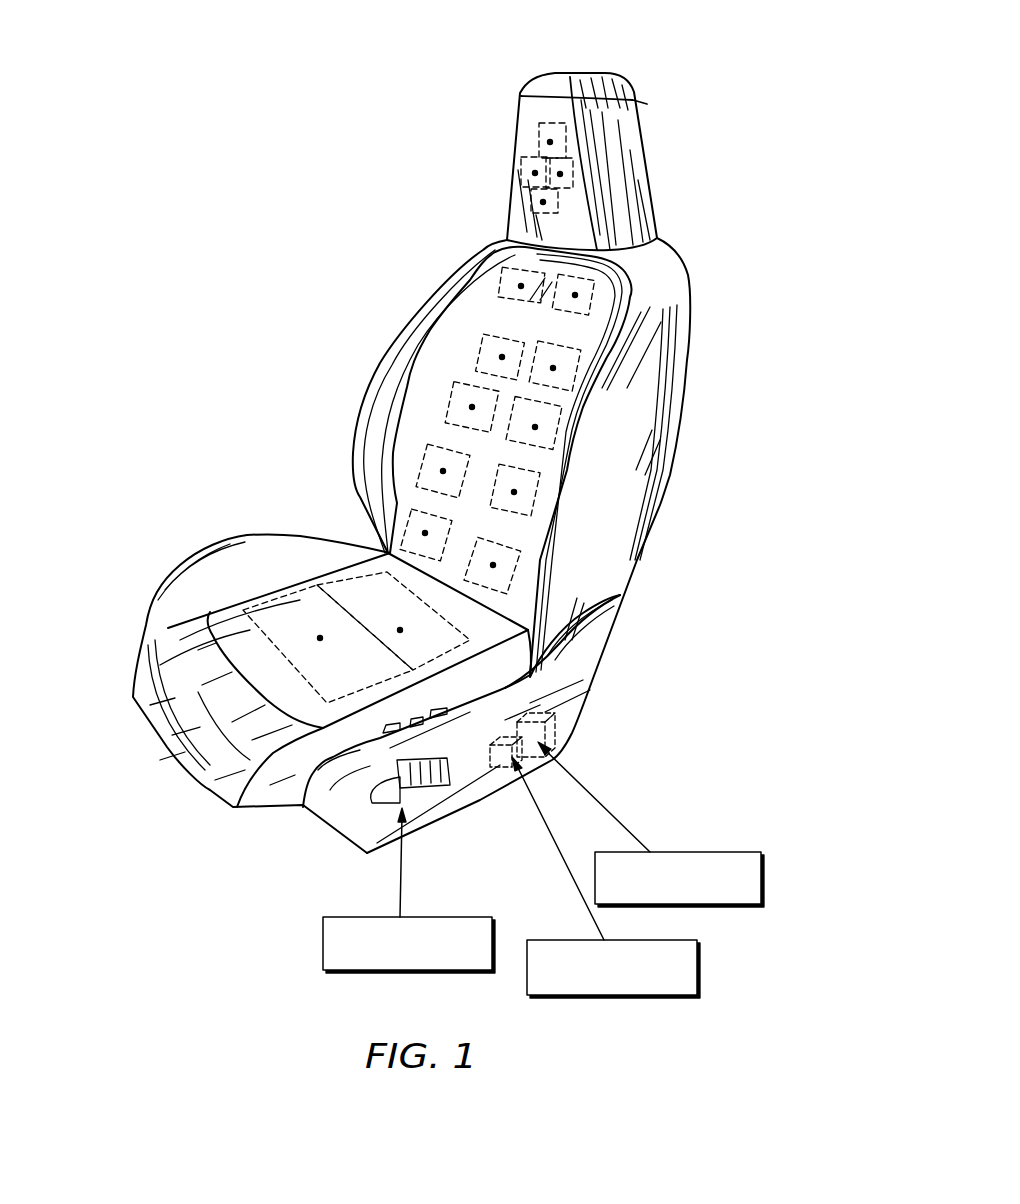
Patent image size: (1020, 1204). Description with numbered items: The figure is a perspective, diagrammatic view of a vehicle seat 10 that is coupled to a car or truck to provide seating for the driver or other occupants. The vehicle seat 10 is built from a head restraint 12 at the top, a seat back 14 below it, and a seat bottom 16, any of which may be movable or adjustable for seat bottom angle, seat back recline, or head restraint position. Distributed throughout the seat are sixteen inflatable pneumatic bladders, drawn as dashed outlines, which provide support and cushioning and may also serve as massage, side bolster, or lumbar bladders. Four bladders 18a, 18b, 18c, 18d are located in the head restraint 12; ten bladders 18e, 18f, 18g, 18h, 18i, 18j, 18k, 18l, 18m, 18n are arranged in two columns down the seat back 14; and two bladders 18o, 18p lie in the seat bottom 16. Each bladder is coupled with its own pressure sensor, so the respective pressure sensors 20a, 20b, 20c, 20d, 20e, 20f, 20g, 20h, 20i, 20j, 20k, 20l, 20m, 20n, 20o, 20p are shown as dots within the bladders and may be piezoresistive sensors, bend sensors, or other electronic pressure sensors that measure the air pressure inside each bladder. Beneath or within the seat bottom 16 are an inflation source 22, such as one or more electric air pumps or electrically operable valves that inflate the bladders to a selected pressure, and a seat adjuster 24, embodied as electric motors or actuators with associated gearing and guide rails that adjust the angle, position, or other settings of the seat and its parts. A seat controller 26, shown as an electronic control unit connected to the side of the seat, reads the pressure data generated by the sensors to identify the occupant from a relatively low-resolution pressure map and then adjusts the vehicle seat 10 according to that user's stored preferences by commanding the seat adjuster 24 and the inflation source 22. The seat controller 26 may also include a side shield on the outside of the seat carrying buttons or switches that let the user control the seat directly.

The vehicle seat 10 is at (287, 112).
The head restraint 12 is at (620, 87).
The seat back 14 is at (655, 385).
The seat bottom 16 is at (170, 728).
The pneumatic bladder 18a is at (553, 120).
The pneumatic bladder 18b is at (525, 157).
The pneumatic bladder 18c is at (572, 157).
The pneumatic bladder 18d is at (560, 210).
The pneumatic bladder 18e is at (525, 268).
The pneumatic bladder 18f is at (592, 282).
The pneumatic bladder 18g is at (510, 336).
The pneumatic bladder 18h is at (565, 342).
The pneumatic bladder 18i is at (485, 383).
The pneumatic bladder 18j is at (555, 402).
The pneumatic bladder 18k is at (453, 446).
The pneumatic bladder 18l is at (540, 462).
The pneumatic bladder 18m is at (405, 510).
The pneumatic bladder 18n is at (515, 535).
The pneumatic bladder 18o is at (470, 638).
The pneumatic bladder 18p is at (247, 614).
The pressure sensor 20a is at (550, 142).
The pressure sensor 20b is at (535, 173).
The pressure sensor 20c is at (560, 174).
The pressure sensor 20d is at (543, 202).
The pressure sensor 20e is at (521, 286).
The pressure sensor 20f is at (575, 295).
The pressure sensor 20g is at (502, 357).
The pressure sensor 20h is at (553, 368).
The pressure sensor 20i is at (472, 407).
The pressure sensor 20j is at (535, 427).
The pressure sensor 20k is at (443, 471).
The pressure sensor 20l is at (514, 492).
The pressure sensor 20m is at (425, 533).
The pressure sensor 20n is at (493, 565).
The pressure sensor 20o is at (400, 630).
The pressure sensor 20p is at (320, 638).
The inflation source 22 is at (740, 845).
The seat adjuster 24 is at (668, 935).
The seat controller 26 is at (448, 917).